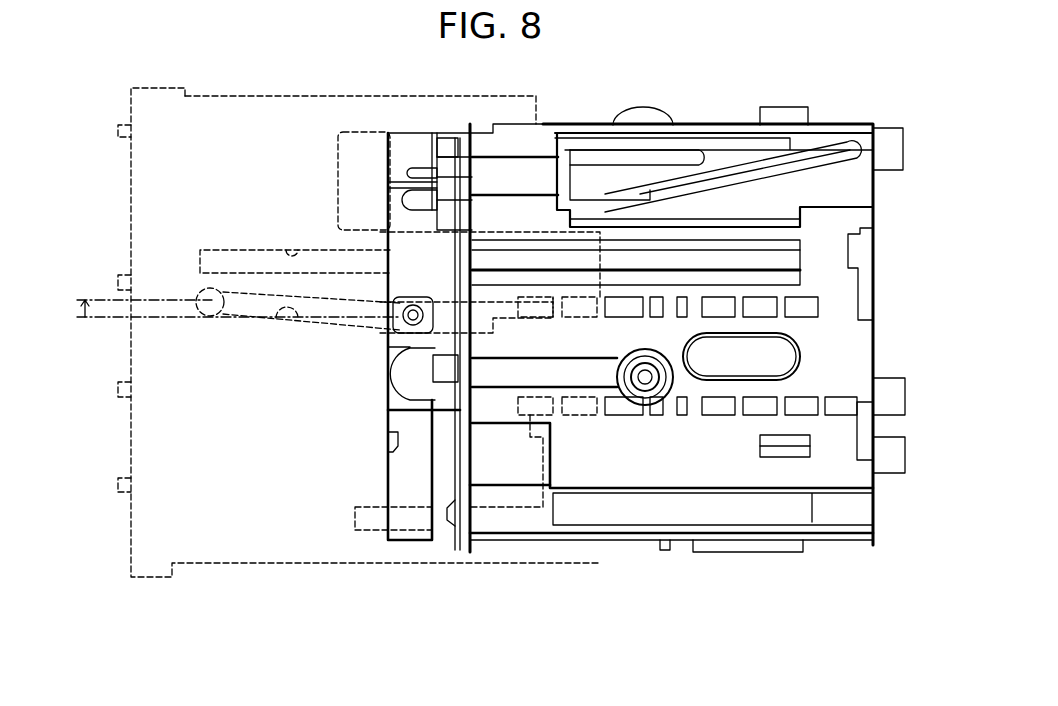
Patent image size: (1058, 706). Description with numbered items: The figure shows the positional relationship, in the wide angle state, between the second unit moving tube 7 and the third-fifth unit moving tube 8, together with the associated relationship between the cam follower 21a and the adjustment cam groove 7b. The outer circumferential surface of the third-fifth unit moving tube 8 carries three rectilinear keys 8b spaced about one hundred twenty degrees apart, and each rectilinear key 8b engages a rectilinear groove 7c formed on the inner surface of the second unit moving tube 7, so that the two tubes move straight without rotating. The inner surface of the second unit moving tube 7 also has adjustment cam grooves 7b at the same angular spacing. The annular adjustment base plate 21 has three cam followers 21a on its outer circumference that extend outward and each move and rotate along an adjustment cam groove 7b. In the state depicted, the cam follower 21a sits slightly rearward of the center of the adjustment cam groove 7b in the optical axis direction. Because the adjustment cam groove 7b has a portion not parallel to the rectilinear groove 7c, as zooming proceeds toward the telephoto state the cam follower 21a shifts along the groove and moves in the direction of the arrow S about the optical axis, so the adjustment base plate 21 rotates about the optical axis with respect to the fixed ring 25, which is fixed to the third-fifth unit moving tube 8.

The second unit moving tube 7 is at (227, 96).
The rectilinear groove 7c is at (297, 250).
The adjustment cam groove 7b is at (292, 320).
The arrow indicating rotation direction S is at (226, 310).
The adjustment base plate 21 is at (411, 493).
The cam follower 21a is at (405, 325).
The fixed ring 25 is at (448, 493).
The third-fifth unit moving tube 8 is at (830, 232).
The rectilinear key 8b is at (777, 262).